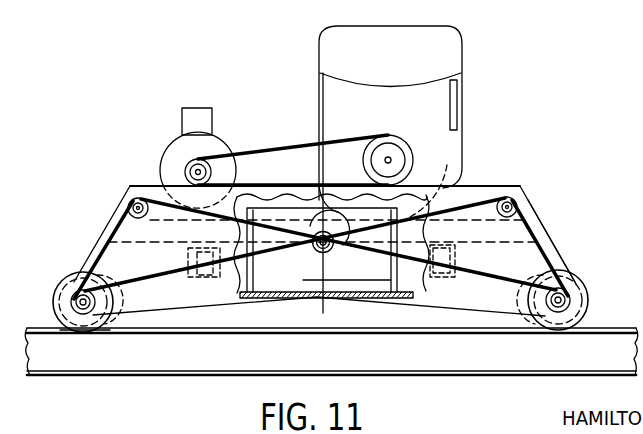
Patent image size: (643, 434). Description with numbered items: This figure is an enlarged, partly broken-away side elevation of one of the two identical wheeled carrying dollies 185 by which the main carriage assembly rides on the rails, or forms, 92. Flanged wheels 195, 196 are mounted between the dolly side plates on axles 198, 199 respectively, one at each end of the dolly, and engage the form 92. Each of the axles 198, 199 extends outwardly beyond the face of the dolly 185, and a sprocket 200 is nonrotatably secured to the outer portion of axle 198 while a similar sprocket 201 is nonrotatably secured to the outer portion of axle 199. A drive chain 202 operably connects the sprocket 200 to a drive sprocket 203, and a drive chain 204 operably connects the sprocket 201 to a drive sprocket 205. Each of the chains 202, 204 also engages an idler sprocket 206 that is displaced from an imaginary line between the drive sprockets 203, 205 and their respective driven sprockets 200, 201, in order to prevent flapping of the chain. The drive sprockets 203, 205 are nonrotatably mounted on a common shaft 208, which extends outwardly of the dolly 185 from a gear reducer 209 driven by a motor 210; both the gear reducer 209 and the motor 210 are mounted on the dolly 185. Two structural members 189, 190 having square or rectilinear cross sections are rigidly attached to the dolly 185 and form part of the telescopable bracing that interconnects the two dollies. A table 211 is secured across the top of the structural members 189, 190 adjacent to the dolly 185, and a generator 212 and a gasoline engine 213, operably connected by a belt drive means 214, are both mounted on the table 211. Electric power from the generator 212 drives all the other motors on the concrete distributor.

The form 92 is at (331, 351).
The wheeled carrying dolly 185 is at (143, 180).
The structural member 189 is at (458, 267).
The structural member 190 is at (190, 263).
The flanged wheel 195 is at (587, 307).
The flanged wheel 196 is at (67, 260).
The axle 198 is at (575, 292).
The axle 199 is at (84, 253).
The sprocket 200 is at (568, 270).
The sprocket 201 is at (96, 312).
The drive chain 202 is at (547, 250).
The drive sprocket 203 is at (323, 302).
The drive chain 204 is at (107, 220).
The drive sprocket 205 is at (333, 250).
The idler sprocket 206 is at (129, 186).
The common shaft 208 is at (305, 160).
The gear reducer 209 is at (310, 258).
The motor 210 is at (460, 170).
The table 211 is at (540, 215).
The generator 212 is at (173, 150).
The gasoline engine 213 is at (440, 110).
The belt drive means 214 is at (297, 147).